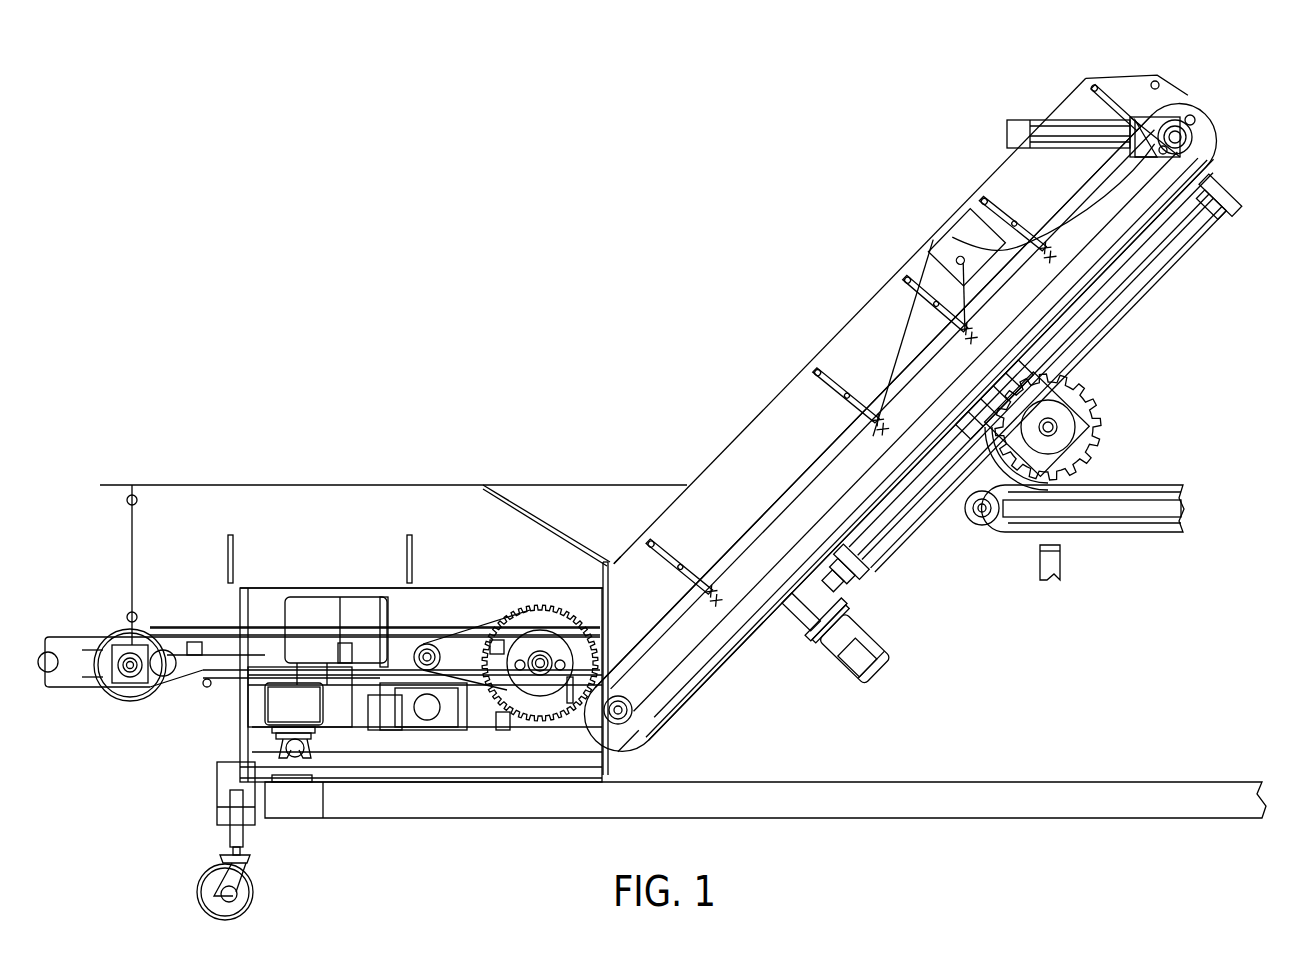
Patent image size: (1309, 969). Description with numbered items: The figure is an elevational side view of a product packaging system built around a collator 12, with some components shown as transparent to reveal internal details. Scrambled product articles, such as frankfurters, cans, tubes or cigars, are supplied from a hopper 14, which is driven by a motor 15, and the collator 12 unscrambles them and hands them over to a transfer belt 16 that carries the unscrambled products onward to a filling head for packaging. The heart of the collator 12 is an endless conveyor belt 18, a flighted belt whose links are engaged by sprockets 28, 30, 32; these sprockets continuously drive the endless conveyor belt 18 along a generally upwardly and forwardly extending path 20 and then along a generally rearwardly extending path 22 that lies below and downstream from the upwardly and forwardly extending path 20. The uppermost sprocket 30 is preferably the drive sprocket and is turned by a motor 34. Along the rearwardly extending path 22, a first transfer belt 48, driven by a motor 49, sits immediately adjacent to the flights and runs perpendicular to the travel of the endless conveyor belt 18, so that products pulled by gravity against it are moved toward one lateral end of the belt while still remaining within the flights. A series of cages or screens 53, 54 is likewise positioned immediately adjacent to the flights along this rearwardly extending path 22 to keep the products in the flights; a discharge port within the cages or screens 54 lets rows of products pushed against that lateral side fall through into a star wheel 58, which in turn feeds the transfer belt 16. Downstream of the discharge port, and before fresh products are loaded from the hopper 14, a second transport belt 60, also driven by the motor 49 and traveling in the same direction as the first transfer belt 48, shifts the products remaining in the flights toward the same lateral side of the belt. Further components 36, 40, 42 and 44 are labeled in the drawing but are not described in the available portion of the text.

The collator 12 is at (807, 332).
The hopper 14 is at (601, 527).
The motor 15 is at (314, 600).
The transfer belt 16 is at (1148, 532).
The endless conveyor belt 18 is at (903, 353).
The upwardly and forwardly extending path 20 is at (780, 428).
The rearwardly extending path 22 is at (808, 676).
The sprocket 28 is at (637, 728).
The uppermost sprocket 30 is at (1178, 108).
The sprocket 32 is at (955, 258).
The motor 34 is at (1066, 120).
The hopper outlet 36 is at (630, 630).
The guide plate 40 is at (872, 292).
The cross bar 42 is at (1010, 203).
The guard curve 44 is at (1125, 160).
The first transfer belt 48 is at (1160, 268).
The motor 49 is at (870, 640).
The cage or screen 53 is at (1212, 178).
The cage or screen 54 is at (690, 702).
The star wheel 58 is at (1082, 402).
The second transport belt 60 is at (910, 526).